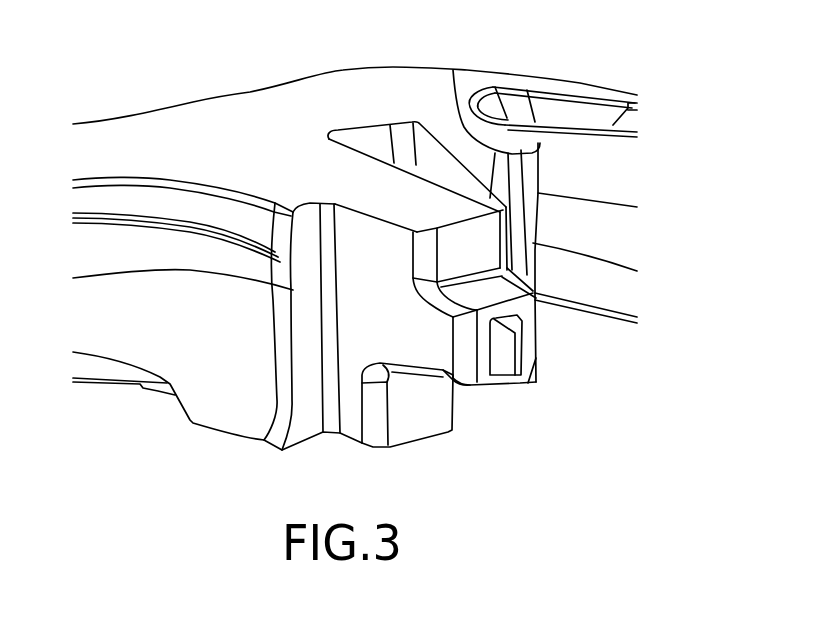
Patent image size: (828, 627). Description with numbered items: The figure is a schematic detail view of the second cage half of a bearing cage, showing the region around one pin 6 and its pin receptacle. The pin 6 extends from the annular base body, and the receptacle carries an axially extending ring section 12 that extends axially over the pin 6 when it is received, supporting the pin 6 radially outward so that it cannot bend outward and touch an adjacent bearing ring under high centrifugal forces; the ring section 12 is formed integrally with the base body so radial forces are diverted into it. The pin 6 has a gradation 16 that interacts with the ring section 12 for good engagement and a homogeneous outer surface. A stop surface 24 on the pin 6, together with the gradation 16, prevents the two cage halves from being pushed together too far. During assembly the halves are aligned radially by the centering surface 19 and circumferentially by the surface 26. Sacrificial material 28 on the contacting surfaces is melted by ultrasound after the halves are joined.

The pin 6 is at (513, 308).
The ring section 12 is at (368, 140).
The gradation 16 is at (468, 243).
The centering surface 19 is at (497, 287).
The stop surface 24 is at (305, 227).
The surface 26 is at (390, 330).
The sacrificial material 28 is at (522, 362).